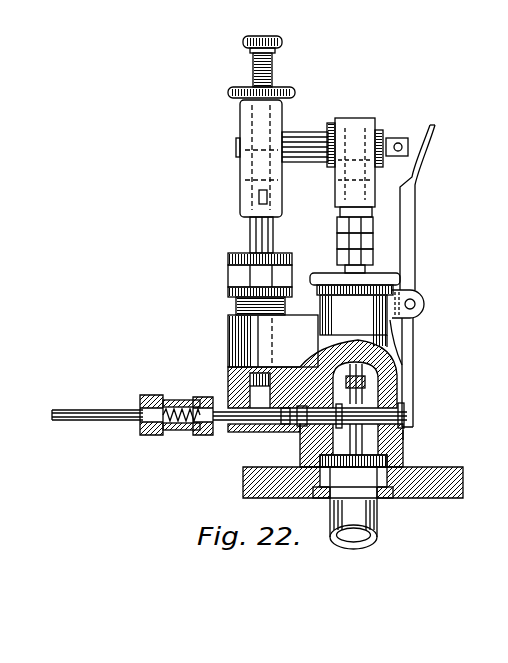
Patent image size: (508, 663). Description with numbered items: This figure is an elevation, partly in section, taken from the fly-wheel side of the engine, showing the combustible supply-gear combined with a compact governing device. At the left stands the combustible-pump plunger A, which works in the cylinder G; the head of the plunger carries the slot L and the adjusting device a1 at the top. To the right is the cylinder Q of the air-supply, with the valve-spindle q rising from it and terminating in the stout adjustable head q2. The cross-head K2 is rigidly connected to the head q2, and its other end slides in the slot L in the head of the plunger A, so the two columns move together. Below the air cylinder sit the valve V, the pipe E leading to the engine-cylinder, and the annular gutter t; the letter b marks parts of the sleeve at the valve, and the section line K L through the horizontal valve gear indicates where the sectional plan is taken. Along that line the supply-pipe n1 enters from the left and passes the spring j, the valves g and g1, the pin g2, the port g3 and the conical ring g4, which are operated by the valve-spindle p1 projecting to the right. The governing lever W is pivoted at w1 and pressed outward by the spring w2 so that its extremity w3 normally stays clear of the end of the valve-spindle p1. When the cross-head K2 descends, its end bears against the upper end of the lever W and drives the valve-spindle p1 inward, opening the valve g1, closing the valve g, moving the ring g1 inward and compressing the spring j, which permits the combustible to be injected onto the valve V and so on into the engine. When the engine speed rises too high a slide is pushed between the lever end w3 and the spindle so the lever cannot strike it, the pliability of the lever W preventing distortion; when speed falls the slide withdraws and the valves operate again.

The adjusting device a1 is at (272, 82).
The cross-head K2 is at (296, 138).
The adjustable head q2 is at (357, 148).
The valve-spindle q is at (347, 270).
The cylinder of the air-supply Q is at (355, 310).
The combustible-pump plunger A is at (250, 235).
The cylinder G is at (273, 341).
The conical ring g4 is at (350, 409).
The valve V is at (353, 472).
The sleeve wall b is at (353, 478).
The pipe E is at (377, 535).
The annular gutter t is at (353, 504).
The supply-pipe n1 is at (78, 416).
The line K L K is at (44, 416).
The slot L is at (413, 418).
The spring j is at (155, 430).
The valve g is at (192, 431).
The port g3 is at (218, 430).
The pin g2 is at (283, 426).
The valve g1 is at (300, 428).
The valve-spindle p1 is at (403, 432).
The lever W is at (412, 238).
The pivot w1 is at (416, 306).
The spring w2 is at (404, 352).
The extremity w3 is at (406, 410).